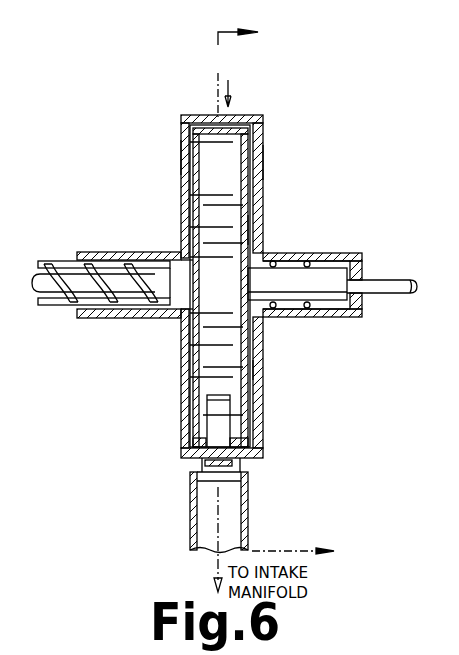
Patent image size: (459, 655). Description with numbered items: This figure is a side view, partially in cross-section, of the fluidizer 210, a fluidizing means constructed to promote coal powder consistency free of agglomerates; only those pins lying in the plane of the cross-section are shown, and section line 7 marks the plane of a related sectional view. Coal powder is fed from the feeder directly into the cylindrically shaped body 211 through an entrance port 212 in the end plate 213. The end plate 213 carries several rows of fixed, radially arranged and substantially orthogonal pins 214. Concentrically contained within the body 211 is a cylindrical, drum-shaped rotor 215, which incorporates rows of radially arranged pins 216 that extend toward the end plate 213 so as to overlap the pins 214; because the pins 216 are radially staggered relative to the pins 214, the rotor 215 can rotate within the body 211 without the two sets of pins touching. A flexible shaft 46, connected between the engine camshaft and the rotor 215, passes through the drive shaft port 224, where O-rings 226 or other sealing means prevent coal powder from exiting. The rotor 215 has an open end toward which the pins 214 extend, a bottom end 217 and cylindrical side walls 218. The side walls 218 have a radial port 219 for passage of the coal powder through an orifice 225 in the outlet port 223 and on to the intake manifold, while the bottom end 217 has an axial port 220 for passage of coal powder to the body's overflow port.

The section line 7- 7 is at (282, 292).
The flexible shaft 46 is at (401, 280).
The fluidizer 210 is at (224, 86).
The body 211 is at (190, 115).
The entrance port 212 is at (93, 252).
The end plate 213 is at (181, 158).
The pins 214 is at (200, 195).
The rotor 215 is at (253, 369).
The pins 216 is at (236, 205).
The bottom end 217 is at (252, 232).
The side walls 218 is at (245, 128).
The radial port 219 is at (222, 410).
The axial port 220 is at (257, 167).
The outlet port 223 is at (202, 462).
The drive shaft port 224 is at (352, 317).
The orifice 225 is at (230, 478).
The O-rings 226 is at (307, 261).